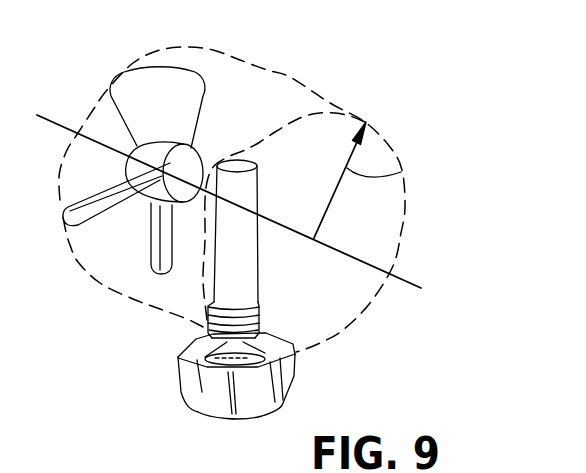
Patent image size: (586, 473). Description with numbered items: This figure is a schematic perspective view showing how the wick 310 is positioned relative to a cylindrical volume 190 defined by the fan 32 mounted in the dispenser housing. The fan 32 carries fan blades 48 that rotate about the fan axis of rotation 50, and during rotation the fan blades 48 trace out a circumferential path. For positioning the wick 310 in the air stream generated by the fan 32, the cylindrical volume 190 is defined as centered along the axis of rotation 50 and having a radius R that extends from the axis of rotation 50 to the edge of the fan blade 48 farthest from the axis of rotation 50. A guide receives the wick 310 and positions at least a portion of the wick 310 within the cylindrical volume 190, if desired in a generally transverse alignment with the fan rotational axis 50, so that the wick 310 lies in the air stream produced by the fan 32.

The fan 32 is at (131, 141).
The fan blade 48 is at (67, 233).
The fan axis of rotation 50 is at (63, 126).
The wick 310 is at (235, 158).
The cylindrical volume 190 is at (346, 329).
The radius R is at (403, 172).